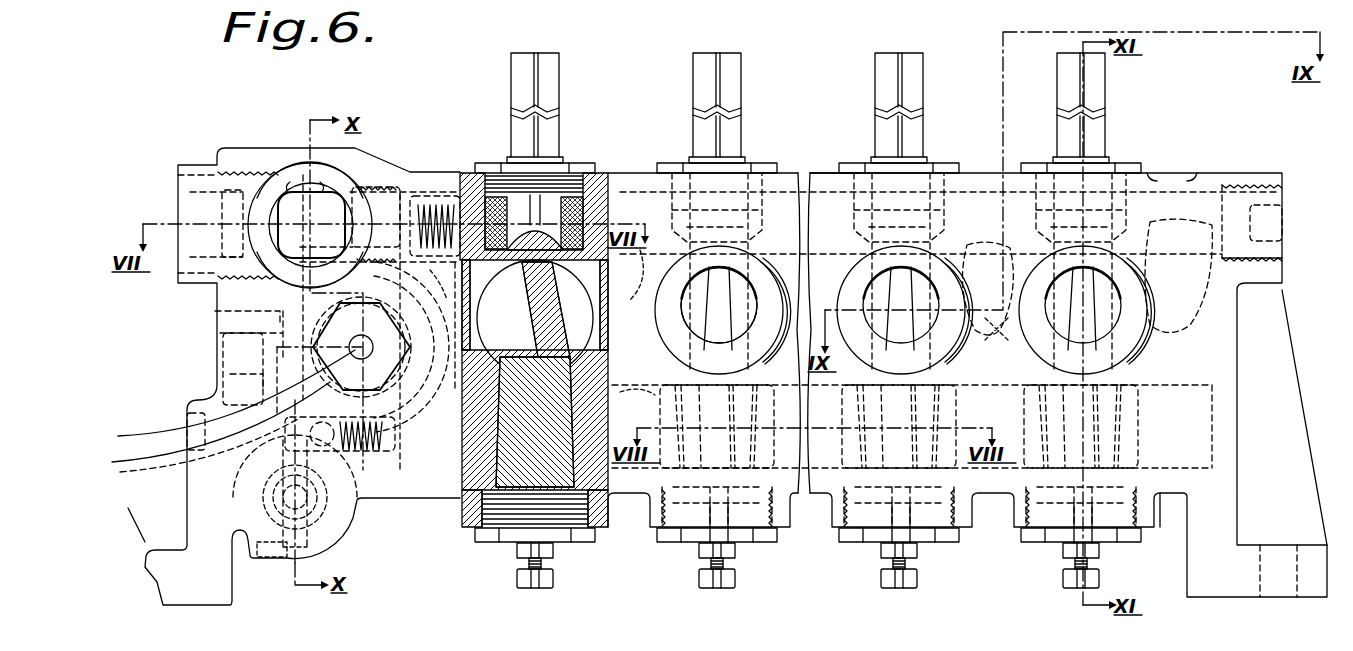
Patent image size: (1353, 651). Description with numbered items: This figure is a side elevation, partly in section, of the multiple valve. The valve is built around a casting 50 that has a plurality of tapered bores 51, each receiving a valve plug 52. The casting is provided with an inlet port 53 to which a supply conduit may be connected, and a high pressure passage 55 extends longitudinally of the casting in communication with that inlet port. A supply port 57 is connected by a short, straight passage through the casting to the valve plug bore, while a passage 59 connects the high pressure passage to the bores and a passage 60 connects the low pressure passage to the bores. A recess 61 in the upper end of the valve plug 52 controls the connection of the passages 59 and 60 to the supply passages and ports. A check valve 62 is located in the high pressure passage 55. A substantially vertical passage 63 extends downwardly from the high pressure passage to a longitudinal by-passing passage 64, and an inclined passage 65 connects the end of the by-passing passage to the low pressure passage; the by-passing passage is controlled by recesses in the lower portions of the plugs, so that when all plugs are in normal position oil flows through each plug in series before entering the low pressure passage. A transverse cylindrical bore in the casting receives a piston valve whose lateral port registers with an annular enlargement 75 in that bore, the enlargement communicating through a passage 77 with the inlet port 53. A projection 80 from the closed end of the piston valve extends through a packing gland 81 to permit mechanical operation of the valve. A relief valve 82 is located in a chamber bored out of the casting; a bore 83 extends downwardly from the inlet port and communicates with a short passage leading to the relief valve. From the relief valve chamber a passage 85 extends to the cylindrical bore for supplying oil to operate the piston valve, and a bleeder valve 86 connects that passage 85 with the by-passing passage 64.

The casting 50 is at (605, 178).
The tapered bore 51 is at (446, 500).
The valve plug 52 is at (535, 445).
The inlet port 53 is at (283, 190).
The high pressure passage 55 is at (802, 198).
The supply port 57 is at (755, 293).
The passage 59 is at (628, 252).
The passage 60 is at (424, 292).
The recess 61 is at (548, 303).
The check valve 62 is at (416, 165).
The vertical passage 63 is at (420, 388).
The by-passing passage 64 is at (625, 392).
The inclined passage 65 is at (1210, 322).
The annular enlargement 75 is at (217, 290).
The passage 77 is at (328, 200).
The projection 80 is at (218, 398).
The packing gland 81 is at (204, 428).
The relief valve 82 is at (280, 548).
The bore 83 is at (215, 311).
The passage 85 is at (230, 374).
The bleeder valve 86 is at (350, 519).